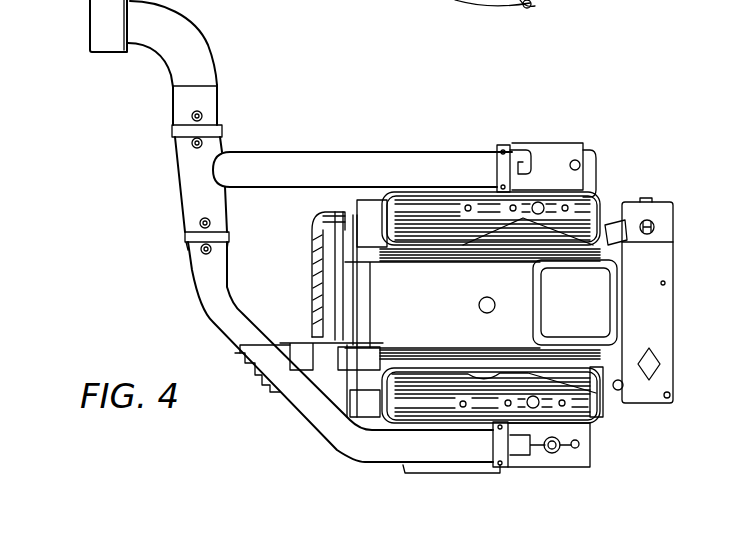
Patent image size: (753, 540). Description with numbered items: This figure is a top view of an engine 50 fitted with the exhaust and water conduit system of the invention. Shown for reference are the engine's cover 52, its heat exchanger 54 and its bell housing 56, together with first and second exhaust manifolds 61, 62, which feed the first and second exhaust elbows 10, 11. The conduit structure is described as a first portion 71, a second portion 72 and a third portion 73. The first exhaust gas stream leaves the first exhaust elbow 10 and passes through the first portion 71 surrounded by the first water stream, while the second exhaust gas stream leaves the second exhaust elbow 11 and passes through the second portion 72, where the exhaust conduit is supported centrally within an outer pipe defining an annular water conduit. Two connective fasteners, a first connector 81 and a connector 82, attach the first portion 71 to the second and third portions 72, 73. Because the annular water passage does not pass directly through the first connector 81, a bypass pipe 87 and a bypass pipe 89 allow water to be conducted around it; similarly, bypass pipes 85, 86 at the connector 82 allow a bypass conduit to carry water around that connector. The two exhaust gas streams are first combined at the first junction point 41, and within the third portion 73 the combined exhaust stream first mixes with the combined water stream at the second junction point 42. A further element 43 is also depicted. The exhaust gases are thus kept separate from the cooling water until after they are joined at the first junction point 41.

The first exhaust elbow 10 is at (490, 158).
The second exhaust elbow 11 is at (482, 450).
The first junction point 41 is at (187, 153).
The second junction point 42 is at (88, 33).
The second pipe section 43 is at (188, 222).
The engine 50 is at (603, 407).
The cover 52 is at (435, 326).
The heat exchanger 54 is at (656, 265).
The bell housing 56 is at (547, 3).
The first exhaust manifold 61 is at (565, 150).
The second exhaust manifold 62 is at (550, 463).
The first portion 71 is at (340, 165).
The second portion 72 is at (307, 403).
The third portion 73 is at (175, 25).
The first connector 81 is at (229, 239).
The connector 82 is at (222, 130).
The bypass pipe 85 is at (192, 112).
The bypass pipe 86 is at (205, 141).
The bypass pipe 87 is at (200, 252).
The bypass pipe 89 is at (200, 218).